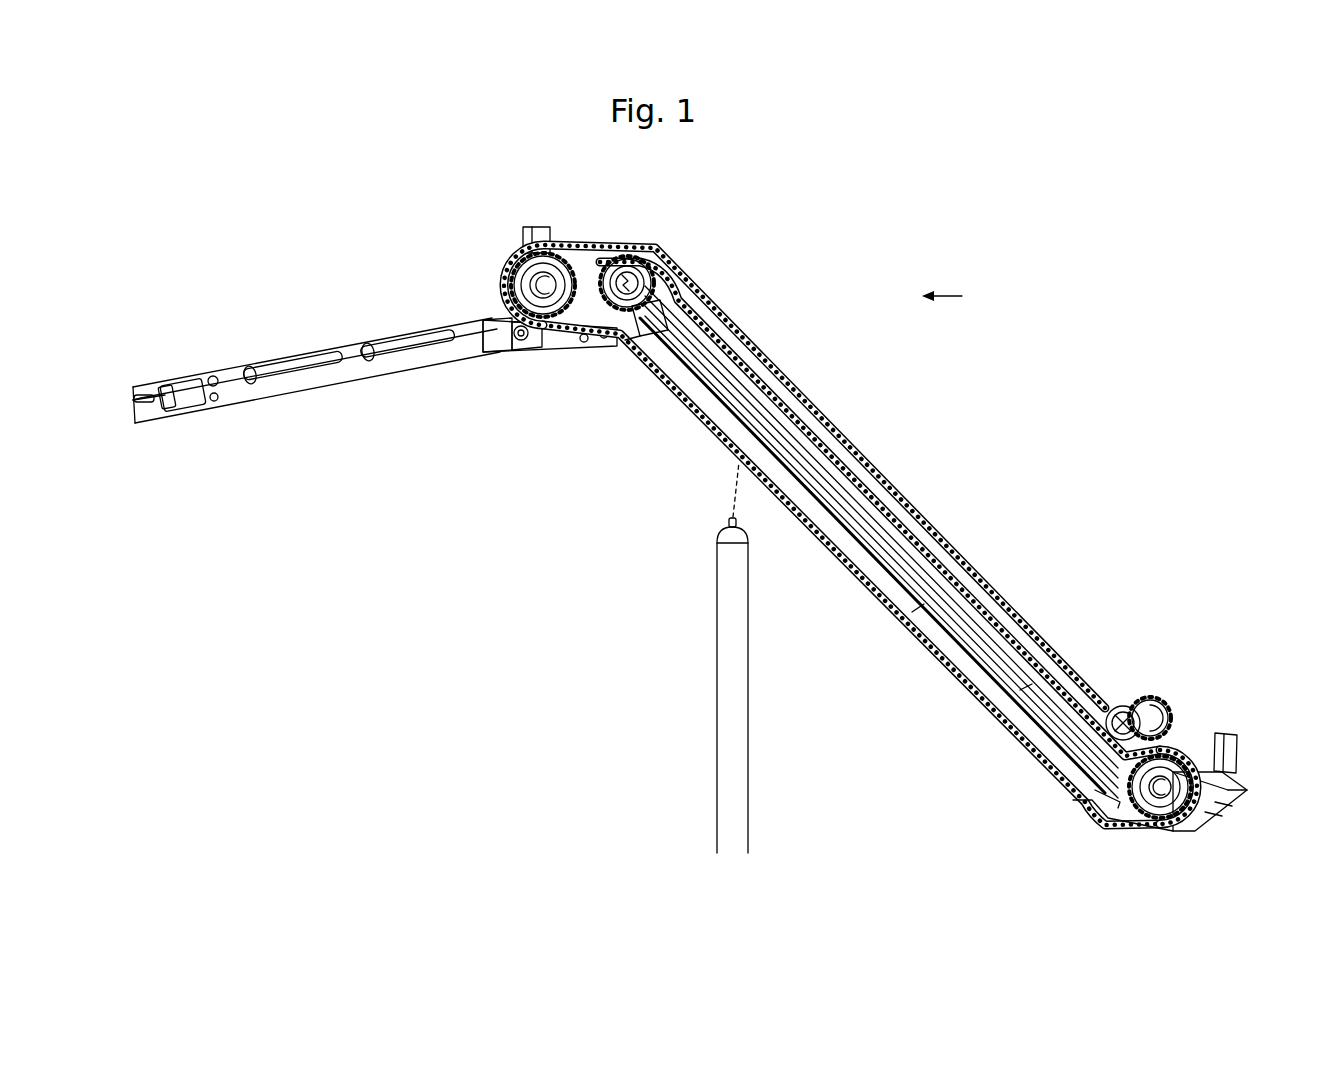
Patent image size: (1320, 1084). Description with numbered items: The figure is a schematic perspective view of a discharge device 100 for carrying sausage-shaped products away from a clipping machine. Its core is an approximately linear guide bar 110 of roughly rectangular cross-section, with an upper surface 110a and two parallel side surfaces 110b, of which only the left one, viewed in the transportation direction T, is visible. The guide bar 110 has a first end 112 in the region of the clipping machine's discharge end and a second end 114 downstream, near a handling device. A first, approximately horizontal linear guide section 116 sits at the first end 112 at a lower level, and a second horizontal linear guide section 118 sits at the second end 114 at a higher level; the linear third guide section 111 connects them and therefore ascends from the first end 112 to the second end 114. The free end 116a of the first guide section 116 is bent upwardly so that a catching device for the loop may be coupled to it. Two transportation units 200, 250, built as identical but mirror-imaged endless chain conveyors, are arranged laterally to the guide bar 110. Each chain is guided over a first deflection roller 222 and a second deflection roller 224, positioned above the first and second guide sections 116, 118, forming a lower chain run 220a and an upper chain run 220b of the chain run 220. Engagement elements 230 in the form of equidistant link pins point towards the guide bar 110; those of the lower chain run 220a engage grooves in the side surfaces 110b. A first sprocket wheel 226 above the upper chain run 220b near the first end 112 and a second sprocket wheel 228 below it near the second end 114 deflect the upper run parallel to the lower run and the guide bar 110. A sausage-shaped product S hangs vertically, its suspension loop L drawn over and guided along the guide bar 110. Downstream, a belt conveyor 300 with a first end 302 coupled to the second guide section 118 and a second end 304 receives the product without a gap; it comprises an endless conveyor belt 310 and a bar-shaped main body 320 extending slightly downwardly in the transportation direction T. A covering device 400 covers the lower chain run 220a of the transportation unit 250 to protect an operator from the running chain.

The discharge device 100 is at (1036, 216).
The guide bar 110 is at (856, 674).
The upper surface 110a is at (975, 665).
The side surface 110b is at (1008, 730).
The third guide section 111 is at (917, 608).
The first end 112 is at (1081, 804).
The second end 114 is at (632, 356).
The first guide section 116 is at (1136, 834).
The free end 116a is at (1212, 794).
The second guide section 118 is at (570, 330).
The transportation unit 200 is at (646, 414).
The chain run 220 is at (818, 654).
The lower chain run 220a is at (852, 568).
The upper chain run 220b is at (873, 503).
The first deflection roller 222 is at (1166, 810).
The second deflection roller 224 is at (558, 262).
The first sprocket wheel 226 is at (1131, 704).
The second sprocket wheel 228 is at (660, 264).
The engagement pins 230 is at (957, 543).
The transportation unit 250 is at (912, 452).
The belt conveyor 300 is at (316, 488).
The first end 302 is at (489, 328).
The second end 304 is at (158, 377).
The endless conveyor belt 310 is at (323, 340).
The main body 320 is at (190, 406).
The covering device 400 is at (532, 228).
The suspension loop L is at (732, 497).
The sausage-shaped product S is at (735, 694).
The transportation direction T is at (942, 304).